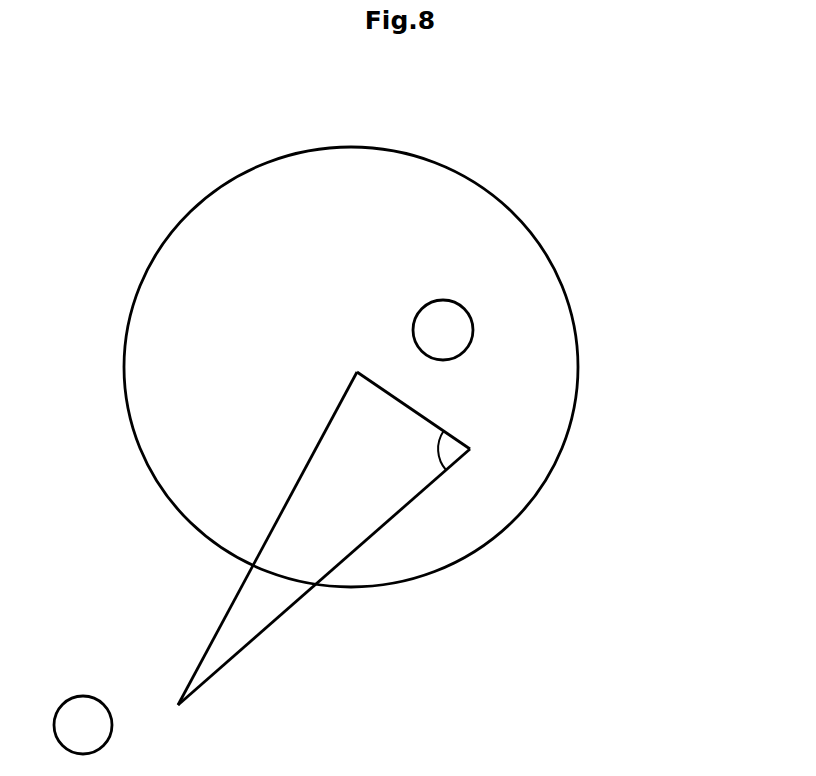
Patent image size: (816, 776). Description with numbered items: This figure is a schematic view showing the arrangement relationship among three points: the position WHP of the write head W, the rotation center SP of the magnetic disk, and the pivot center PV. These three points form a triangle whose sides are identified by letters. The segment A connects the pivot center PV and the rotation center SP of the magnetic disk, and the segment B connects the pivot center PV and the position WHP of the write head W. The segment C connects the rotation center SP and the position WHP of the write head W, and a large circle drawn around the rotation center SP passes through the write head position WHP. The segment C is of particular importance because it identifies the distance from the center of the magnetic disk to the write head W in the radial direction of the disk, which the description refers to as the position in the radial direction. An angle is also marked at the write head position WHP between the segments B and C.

The position of the write head WHP is at (470, 449).
The rotation center of the magnetic disk SP is at (357, 372).
The pivot center PV is at (178, 705).
The segment connecting the pivot center and the rotation center A is at (275, 520).
The segment connecting the pivot center and the position of the write head B is at (338, 565).
The segment connecting the rotation center and the position of the write head C is at (425, 413).